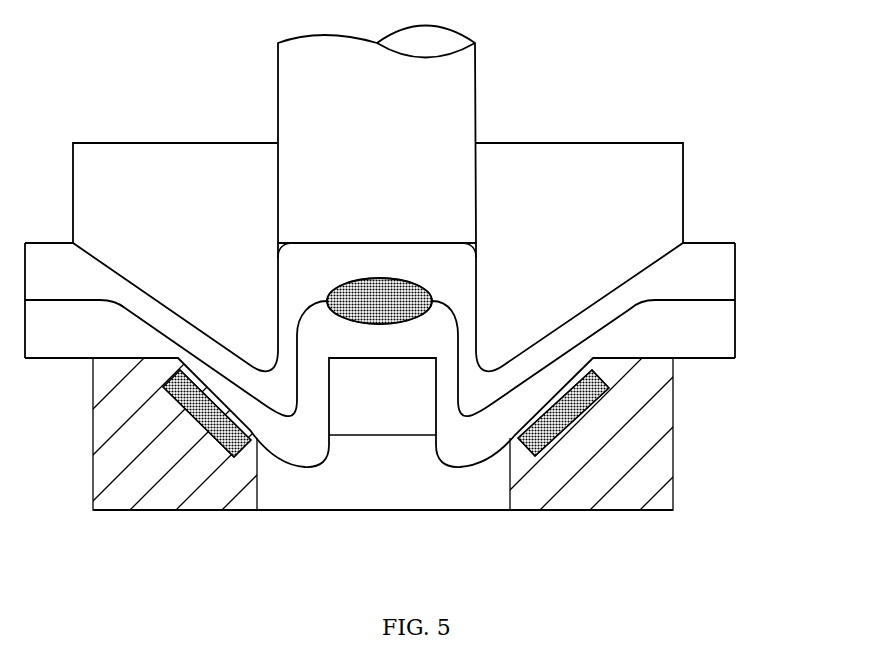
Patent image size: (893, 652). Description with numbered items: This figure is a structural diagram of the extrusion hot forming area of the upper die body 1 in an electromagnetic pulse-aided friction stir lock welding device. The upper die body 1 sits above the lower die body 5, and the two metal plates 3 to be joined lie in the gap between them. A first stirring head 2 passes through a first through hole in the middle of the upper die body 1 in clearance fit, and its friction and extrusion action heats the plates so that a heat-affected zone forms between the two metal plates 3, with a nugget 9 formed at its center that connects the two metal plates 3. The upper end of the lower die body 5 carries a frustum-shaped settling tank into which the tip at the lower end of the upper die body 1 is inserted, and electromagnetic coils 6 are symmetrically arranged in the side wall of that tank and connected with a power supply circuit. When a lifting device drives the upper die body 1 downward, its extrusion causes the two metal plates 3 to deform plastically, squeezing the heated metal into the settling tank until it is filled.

The upper die body 1 is at (188, 198).
The first stirring head 2 is at (344, 162).
The metal plate 3 is at (672, 288).
The lower die body 5 is at (653, 430).
The electromagnetic coil 6 is at (572, 428).
The nugget 9 is at (362, 300).